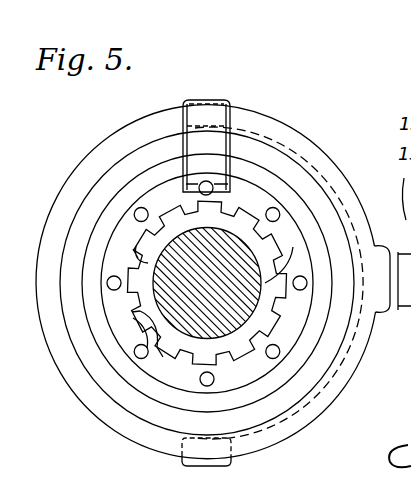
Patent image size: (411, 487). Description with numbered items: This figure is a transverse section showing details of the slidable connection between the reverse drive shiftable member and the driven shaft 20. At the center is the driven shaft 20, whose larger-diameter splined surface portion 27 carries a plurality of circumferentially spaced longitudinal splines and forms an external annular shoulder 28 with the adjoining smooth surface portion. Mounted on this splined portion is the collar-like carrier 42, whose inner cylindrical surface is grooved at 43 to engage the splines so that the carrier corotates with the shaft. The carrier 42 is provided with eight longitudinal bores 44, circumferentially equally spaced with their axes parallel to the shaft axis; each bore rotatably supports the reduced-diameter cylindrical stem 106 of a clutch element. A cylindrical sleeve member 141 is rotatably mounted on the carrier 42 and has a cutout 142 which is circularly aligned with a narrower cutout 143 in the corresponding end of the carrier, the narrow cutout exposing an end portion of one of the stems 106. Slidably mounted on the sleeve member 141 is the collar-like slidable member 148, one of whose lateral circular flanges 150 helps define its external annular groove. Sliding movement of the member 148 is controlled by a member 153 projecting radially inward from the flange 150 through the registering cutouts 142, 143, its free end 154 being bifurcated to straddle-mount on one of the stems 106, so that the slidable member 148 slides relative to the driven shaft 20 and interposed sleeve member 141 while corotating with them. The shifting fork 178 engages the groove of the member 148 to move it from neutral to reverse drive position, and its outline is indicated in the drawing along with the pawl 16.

The driven shaft 20 is at (221, 298).
The carrier 42 is at (285, 330).
The longitudinal bores 44 is at (276, 358).
The pawl 16 is at (132, 312).
The splined surface portion 27 is at (127, 254).
The external annular shoulder 28 is at (284, 258).
The grooves 43 is at (155, 344).
The cylindrical stem 106 is at (275, 352).
The sleeve member 141 is at (115, 362).
The cutout 142 is at (235, 170).
The cutout 143 is at (262, 148).
The slidable member 148 is at (73, 173).
The circular flange 150 is at (118, 147).
The projecting member 153 is at (190, 147).
The bifurcated free end 154 is at (194, 186).
The shifting fork 178 is at (346, 157).